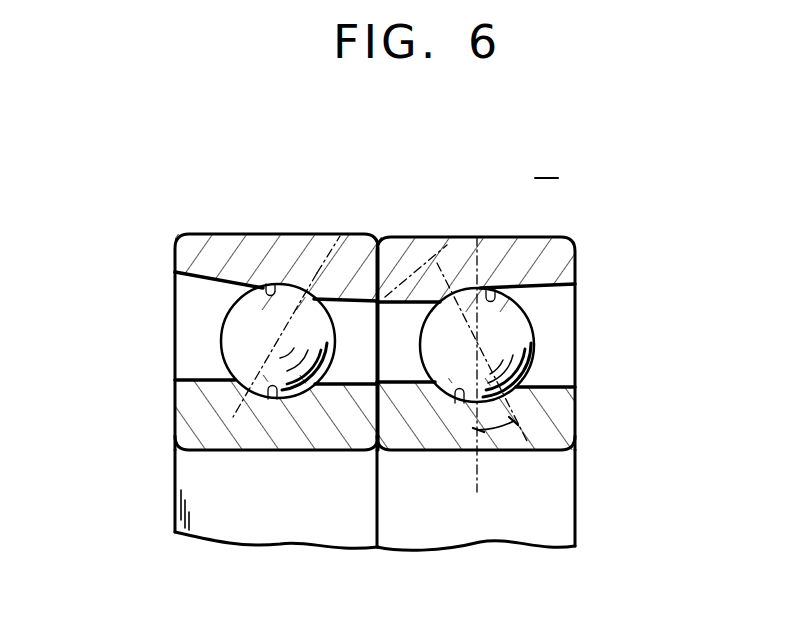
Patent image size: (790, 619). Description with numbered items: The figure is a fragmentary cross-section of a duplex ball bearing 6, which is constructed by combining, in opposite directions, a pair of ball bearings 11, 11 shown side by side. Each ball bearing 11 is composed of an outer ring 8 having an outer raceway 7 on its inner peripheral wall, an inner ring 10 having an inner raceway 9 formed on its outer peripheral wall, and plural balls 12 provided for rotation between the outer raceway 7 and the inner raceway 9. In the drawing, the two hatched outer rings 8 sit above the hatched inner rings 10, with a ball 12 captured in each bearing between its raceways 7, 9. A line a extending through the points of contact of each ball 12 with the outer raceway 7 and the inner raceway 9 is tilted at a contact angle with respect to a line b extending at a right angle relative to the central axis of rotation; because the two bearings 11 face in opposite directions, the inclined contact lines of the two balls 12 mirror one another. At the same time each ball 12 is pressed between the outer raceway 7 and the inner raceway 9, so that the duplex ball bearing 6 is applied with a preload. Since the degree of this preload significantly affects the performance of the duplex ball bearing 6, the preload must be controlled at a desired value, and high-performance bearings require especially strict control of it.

The duplex ball bearing 6 is at (531, 232).
The outer raceway 7 is at (269, 286).
The outer ring 8 is at (408, 256).
The inner raceway 9 is at (272, 398).
The inner ring 10 is at (337, 438).
The ball bearing 11 is at (172, 254).
The ball 12 is at (237, 323).
The line extending through the points of contact a is at (262, 358).
The line extending at a right angle relative to the central axis of rotation b is at (477, 250).